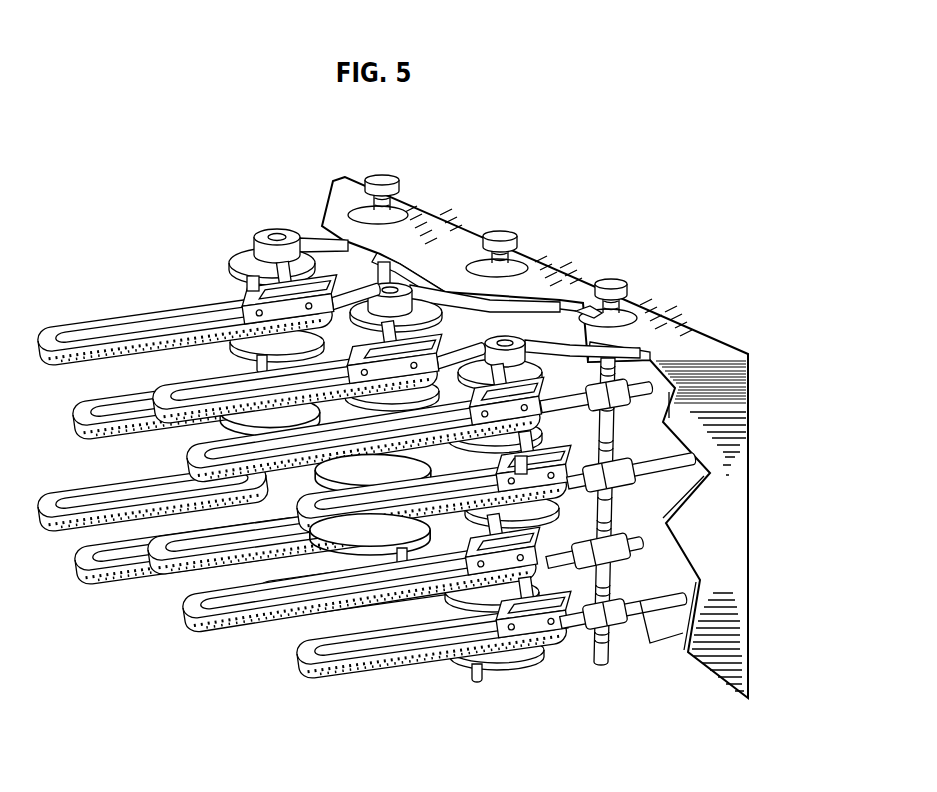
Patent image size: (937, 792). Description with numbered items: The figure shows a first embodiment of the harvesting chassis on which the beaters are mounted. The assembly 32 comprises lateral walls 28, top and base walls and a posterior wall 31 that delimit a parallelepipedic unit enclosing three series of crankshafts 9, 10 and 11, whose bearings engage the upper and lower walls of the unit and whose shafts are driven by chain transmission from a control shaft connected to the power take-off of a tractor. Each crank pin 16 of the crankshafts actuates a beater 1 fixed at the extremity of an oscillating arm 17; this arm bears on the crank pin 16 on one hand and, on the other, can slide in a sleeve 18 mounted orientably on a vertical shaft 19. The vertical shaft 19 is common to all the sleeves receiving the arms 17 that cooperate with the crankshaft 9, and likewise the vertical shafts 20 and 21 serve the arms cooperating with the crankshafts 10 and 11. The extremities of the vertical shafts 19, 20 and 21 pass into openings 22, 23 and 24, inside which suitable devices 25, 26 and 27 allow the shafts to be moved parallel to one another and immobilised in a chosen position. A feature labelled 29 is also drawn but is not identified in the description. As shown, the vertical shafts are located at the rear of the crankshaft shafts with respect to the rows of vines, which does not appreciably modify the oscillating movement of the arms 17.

The beater 1 is at (120, 570).
The crankshaft 9 is at (535, 366).
The crankshaft 10 is at (425, 320).
The crankshaft 11 is at (312, 266).
The crank pin 16 is at (243, 285).
The oscillating arm 17 is at (641, 549).
The sleeve 18 is at (634, 403).
The vertical shaft 19 is at (621, 346).
The vertical shaft 20 is at (573, 316).
The vertical shaft 21 is at (388, 282).
The opening 22 is at (620, 275).
The opening 23 is at (512, 225).
The opening 24 is at (401, 176).
The device 25 is at (592, 300).
The device 26 is at (484, 238).
The device 27 is at (413, 177).
The lateral wall 28 is at (728, 500).
The top edge of plate 29 is at (697, 347).
The posterior wall 31 is at (672, 570).
The assembly 32 is at (757, 640).